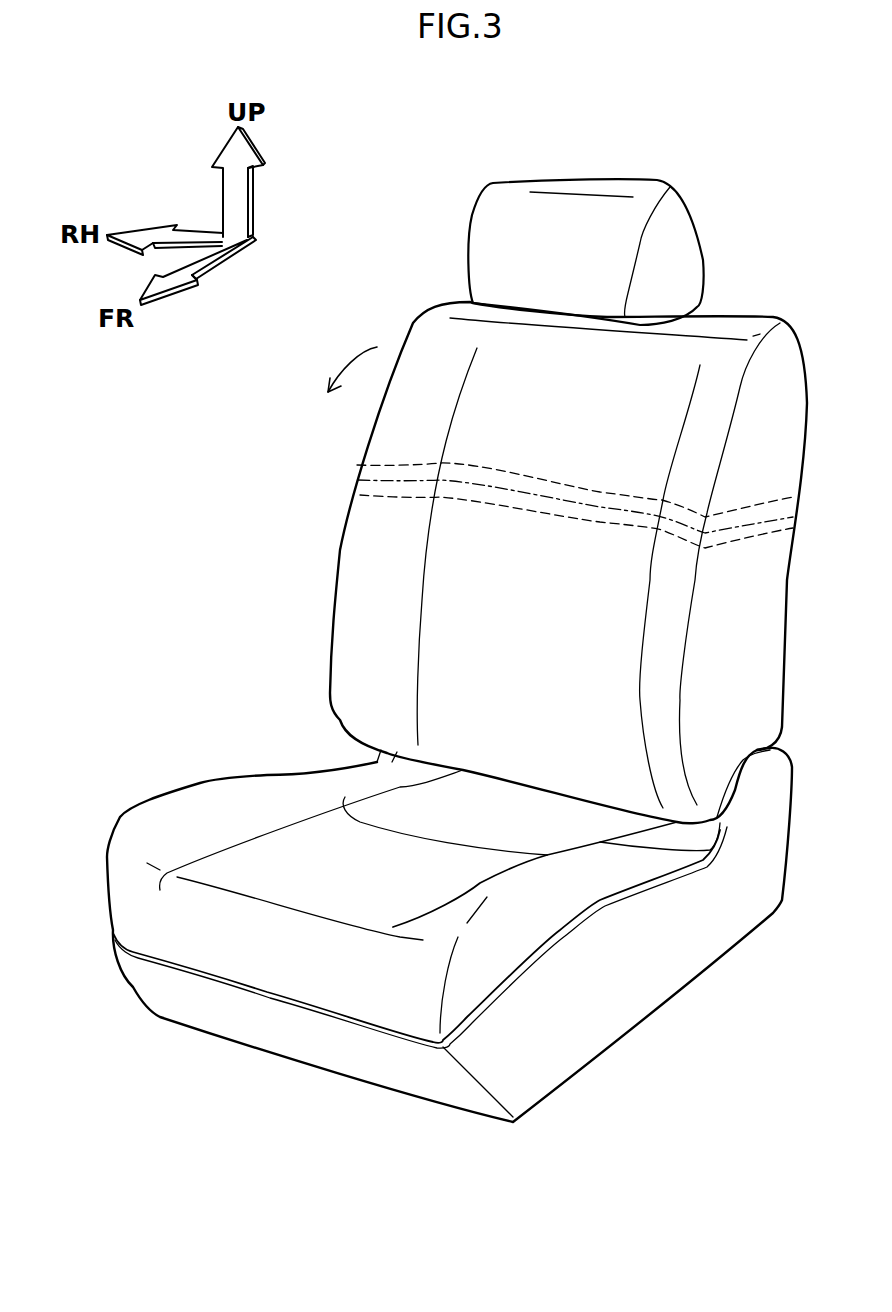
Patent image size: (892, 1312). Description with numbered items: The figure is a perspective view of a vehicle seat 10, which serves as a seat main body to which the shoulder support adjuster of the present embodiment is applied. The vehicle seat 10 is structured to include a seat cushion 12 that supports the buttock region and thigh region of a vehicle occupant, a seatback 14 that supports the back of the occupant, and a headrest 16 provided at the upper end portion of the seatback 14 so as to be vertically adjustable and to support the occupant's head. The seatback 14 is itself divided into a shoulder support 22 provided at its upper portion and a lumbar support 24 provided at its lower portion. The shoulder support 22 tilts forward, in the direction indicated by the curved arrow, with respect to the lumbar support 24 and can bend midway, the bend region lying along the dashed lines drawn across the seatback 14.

The vehicle seat 10 is at (217, 472).
The seat cushion 12 is at (220, 798).
The seatback 14 is at (320, 617).
The headrest 16 is at (685, 237).
The shoulder support 22 is at (390, 440).
The lumbar support 24 is at (362, 548).